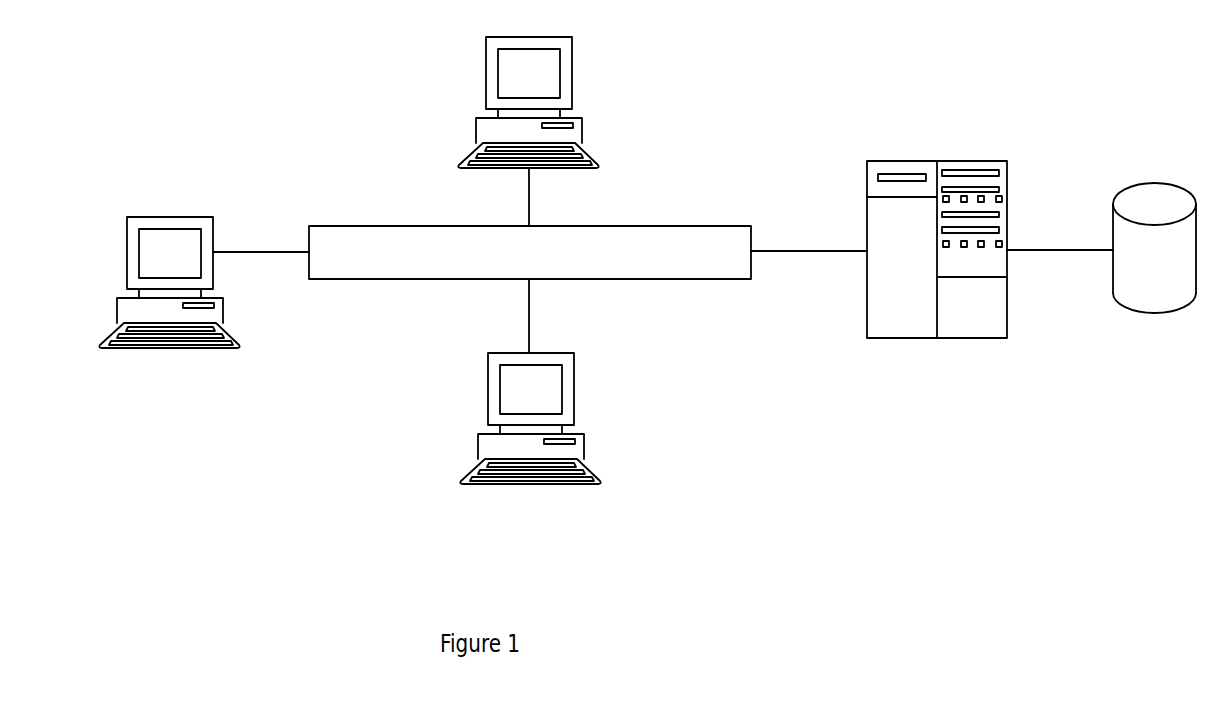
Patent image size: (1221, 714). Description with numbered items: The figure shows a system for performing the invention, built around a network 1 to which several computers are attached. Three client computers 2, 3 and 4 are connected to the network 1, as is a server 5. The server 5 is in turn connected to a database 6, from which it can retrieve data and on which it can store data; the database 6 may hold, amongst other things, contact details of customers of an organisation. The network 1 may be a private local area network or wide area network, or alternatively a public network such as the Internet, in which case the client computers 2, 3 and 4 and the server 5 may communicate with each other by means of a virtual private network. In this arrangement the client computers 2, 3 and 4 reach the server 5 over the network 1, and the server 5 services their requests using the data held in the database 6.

The network 1 is at (678, 281).
The client computer 2 is at (483, 401).
The client computer 3 is at (166, 214).
The client computer 4 is at (575, 67).
The server 5 is at (937, 161).
The database 6 is at (1158, 315).